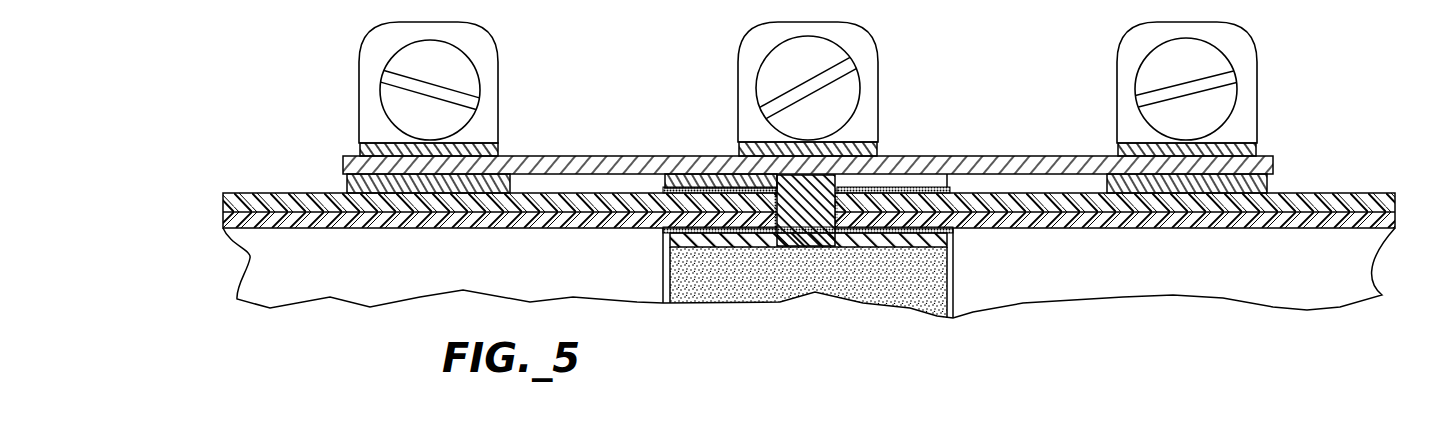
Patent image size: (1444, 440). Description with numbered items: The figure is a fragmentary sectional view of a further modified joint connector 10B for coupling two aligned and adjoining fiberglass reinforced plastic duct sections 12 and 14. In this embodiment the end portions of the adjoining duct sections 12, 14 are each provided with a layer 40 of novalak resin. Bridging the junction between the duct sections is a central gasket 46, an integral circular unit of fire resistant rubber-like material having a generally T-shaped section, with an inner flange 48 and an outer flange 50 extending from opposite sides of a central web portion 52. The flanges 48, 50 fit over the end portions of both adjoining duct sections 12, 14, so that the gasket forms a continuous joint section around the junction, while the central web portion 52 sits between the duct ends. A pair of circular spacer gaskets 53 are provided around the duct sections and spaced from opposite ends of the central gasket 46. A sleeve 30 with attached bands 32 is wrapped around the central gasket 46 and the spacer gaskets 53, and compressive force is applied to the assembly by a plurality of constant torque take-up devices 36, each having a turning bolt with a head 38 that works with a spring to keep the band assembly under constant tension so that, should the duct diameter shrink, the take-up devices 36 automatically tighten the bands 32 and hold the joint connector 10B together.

The joint connector 10B is at (899, 48).
The duct section 12 is at (292, 194).
The duct section 14 is at (1360, 194).
The sleeve 30 is at (923, 155).
The band 32 is at (1258, 143).
The take-up device 36 is at (1224, 71).
The head 38 is at (1197, 47).
The layer of novalak resin 40 is at (663, 229).
The central gasket 46 is at (665, 186).
The inner flange 48 is at (665, 245).
The outer flange 50 is at (946, 187).
The central web portion 52 is at (816, 218).
The spacer gasket 53 is at (1270, 183).